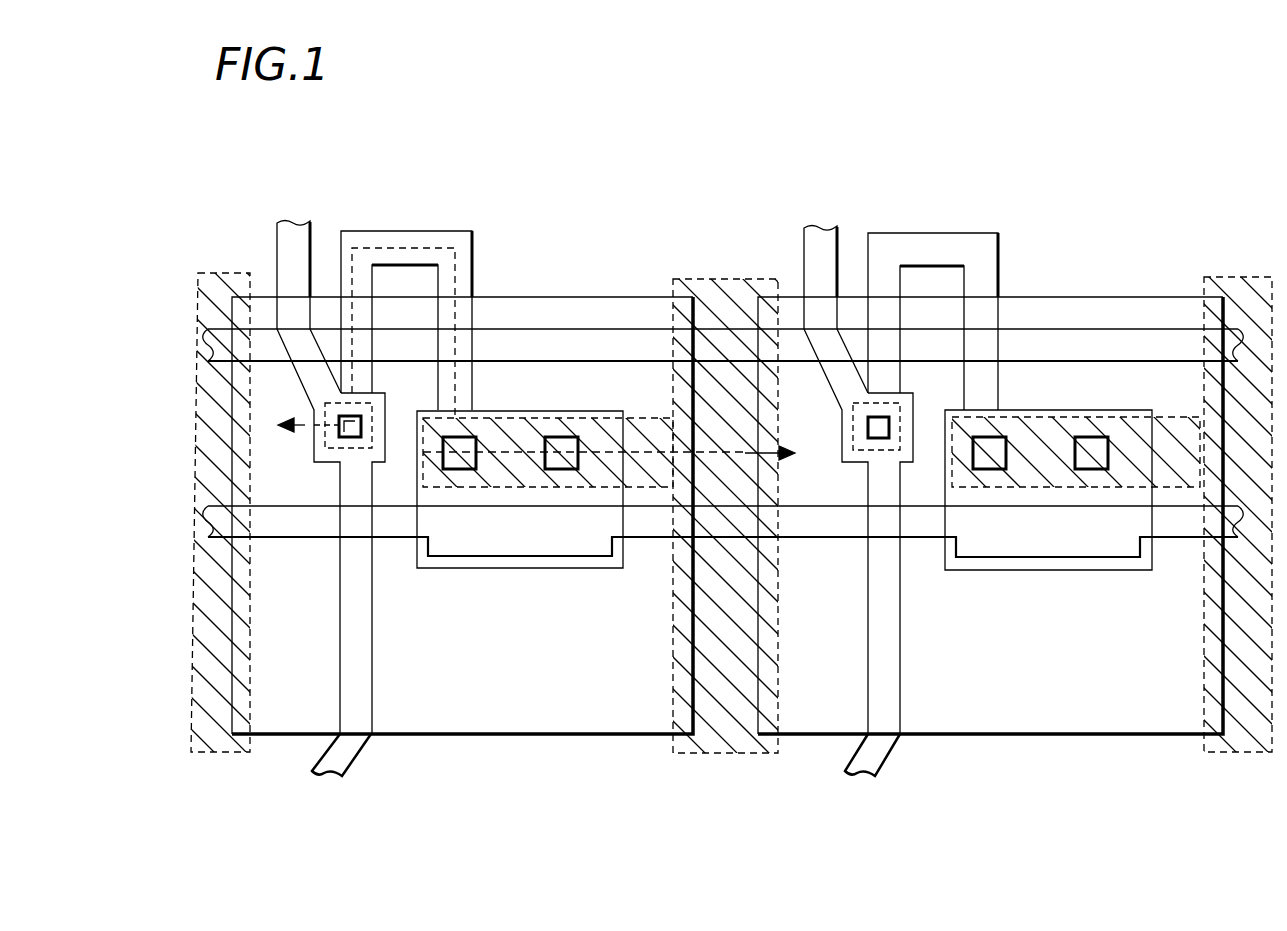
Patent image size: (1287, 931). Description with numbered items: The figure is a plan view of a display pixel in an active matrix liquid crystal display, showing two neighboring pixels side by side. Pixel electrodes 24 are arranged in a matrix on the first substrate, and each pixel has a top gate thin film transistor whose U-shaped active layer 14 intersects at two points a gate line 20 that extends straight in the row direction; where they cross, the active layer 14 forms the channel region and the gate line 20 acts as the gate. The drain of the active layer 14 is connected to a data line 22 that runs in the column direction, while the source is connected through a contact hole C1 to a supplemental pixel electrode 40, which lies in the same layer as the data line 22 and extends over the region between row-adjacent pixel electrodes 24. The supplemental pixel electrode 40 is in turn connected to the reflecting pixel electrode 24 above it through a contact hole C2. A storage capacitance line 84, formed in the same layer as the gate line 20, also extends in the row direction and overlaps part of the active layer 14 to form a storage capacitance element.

The active layer 14 is at (410, 243).
The gate line 20 is at (545, 343).
The data line 22 is at (293, 255).
The pixel electrode 24 is at (588, 315).
The supplemental pixel electrode 40 is at (218, 292).
The storage capacitance line 84 is at (647, 528).
The contact hole C1 is at (456, 469).
The contact hole C2 is at (560, 469).